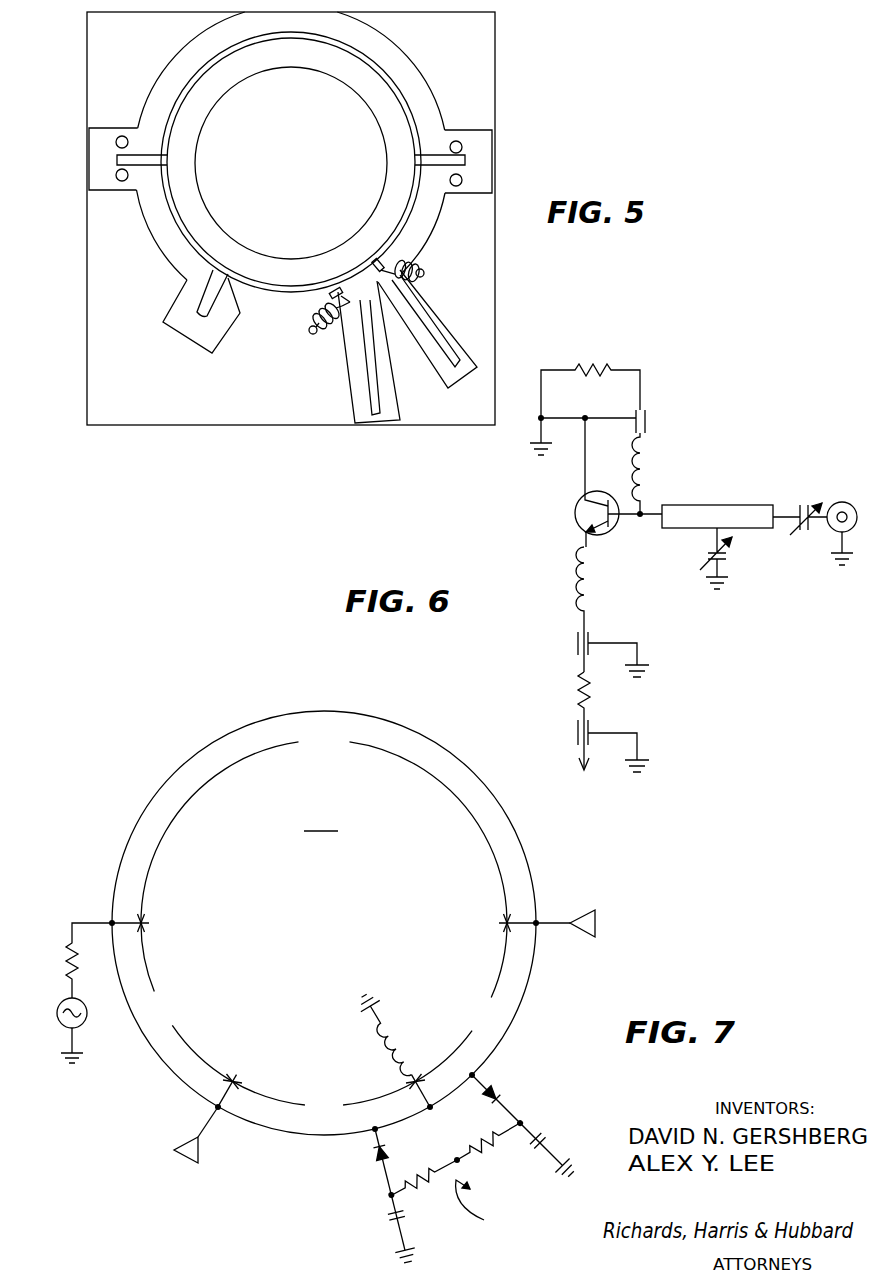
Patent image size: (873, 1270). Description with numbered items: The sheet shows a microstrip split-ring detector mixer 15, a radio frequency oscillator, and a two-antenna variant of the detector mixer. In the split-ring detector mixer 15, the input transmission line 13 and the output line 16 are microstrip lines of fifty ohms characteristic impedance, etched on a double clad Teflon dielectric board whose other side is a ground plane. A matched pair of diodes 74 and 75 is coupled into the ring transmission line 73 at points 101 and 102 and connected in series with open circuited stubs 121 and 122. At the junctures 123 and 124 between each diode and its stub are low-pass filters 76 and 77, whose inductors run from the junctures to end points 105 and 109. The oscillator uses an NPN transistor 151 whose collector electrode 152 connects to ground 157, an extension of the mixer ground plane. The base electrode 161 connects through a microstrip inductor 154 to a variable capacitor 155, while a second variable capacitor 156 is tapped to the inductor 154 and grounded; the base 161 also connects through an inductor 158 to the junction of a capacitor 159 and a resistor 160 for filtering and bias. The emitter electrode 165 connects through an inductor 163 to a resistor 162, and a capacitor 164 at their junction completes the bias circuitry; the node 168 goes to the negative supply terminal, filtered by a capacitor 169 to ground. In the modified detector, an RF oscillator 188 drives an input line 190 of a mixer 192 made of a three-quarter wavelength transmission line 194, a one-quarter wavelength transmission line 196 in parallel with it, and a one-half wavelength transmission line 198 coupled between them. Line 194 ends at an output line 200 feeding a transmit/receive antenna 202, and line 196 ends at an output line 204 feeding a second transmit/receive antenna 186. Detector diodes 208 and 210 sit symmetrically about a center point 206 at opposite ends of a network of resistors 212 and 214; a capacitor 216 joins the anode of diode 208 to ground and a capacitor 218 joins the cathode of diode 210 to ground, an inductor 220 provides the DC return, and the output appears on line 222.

In FIG. 5, the input transmission line 13 is at (155, 158).
In FIG. 5, the split-ring detector mixer 15 is at (500, 82).
In FIG. 5, the output line 16 is at (442, 157).
In FIG. 5, the transmission line 73 is at (250, 280).
In FIG. 5, the diode 74 is at (350, 302).
In FIG. 5, the diode 75 is at (400, 263).
In FIG. 5, the low-pass filter 76 is at (322, 328).
In FIG. 5, the low-pass filter 77 is at (419, 278).
In FIG. 5, the coupling point 101 is at (333, 290).
In FIG. 5, the coupling point 102 is at (375, 261).
In FIG. 5, the filter end point 105 is at (311, 334).
In FIG. 5, the filter end point 109 is at (420, 267).
In FIG. 5, the open circuited stub 121 is at (362, 400).
In FIG. 5, the open circuited stub 122 is at (437, 362).
In FIG. 5, the juncture 123 is at (352, 304).
In FIG. 5, the juncture 124 is at (384, 281).
In FIG. 6, the NPN transistor 151 is at (571, 489).
In FIG. 6, the collector electrode 152 is at (585, 504).
In FIG. 6, the microstrip inductor 154 is at (733, 503).
In FIG. 6, the variable capacitor 155 is at (803, 505).
In FIG. 6, the second variable capacitor 156 is at (722, 563).
In FIG. 6, the ground 157 is at (541, 458).
In FIG. 6, the inductor 158 is at (648, 462).
In FIG. 6, the capacitor 159 is at (650, 416).
In FIG. 6, the resistor 160 is at (605, 368).
In FIG. 6, the base electrode 161 is at (612, 522).
In FIG. 6, the resistor 162 is at (578, 681).
In FIG. 6, the inductor 163 is at (576, 577).
In FIG. 6, the capacitor 164 is at (577, 637).
In FIG. 6, the emitter electrode 165 is at (578, 520).
In FIG. 6, the node 168 is at (578, 750).
In FIG. 6, the capacitor 169 is at (577, 733).
In FIG. 7, the second transmit/receive antenna 186 is at (184, 1141).
In FIG. 7, the RF oscillator 188 is at (58, 1010).
In FIG. 7, the input line 190 is at (97, 921).
In FIG. 7, the mixer 192 is at (324, 864).
In FIG. 7, the three-quarter wavelength transmission line 194 is at (518, 837).
In FIG. 7, the one-quarter wavelength transmission line 196 is at (176, 1075).
In FIG. 7, the one-half wavelength transmission line 198 is at (530, 985).
In FIG. 7, the output line 200 is at (563, 921).
In FIG. 7, the transmit/receive antenna 202 is at (595, 923).
In FIG. 7, the output line 204 is at (216, 1116).
In FIG. 7, the center point 206 is at (430, 1112).
In FIG. 7, the detector diode 208 is at (362, 1198).
In FIG. 7, the detector diode 210 is at (545, 1101).
In FIG. 7, the resistor 212 is at (423, 1184).
In FIG. 7, the resistor 214 is at (500, 1142).
In FIG. 7, the capacitor 216 is at (369, 1218).
In FIG. 7, the capacitor 218 is at (545, 1136).
In FIG. 7, the inductor 220 is at (386, 1043).
In FIG. 7, the output line 222 is at (486, 1208).